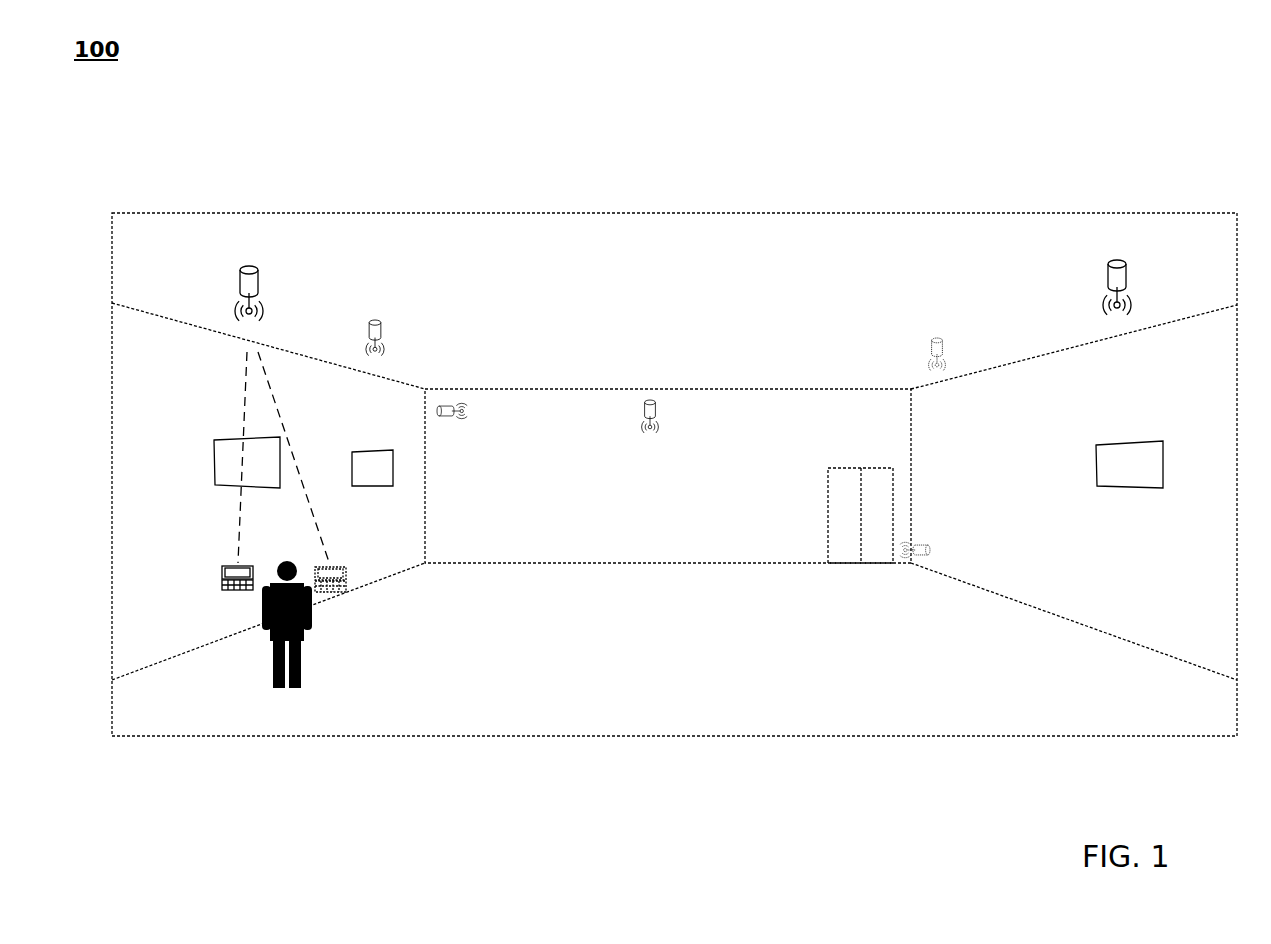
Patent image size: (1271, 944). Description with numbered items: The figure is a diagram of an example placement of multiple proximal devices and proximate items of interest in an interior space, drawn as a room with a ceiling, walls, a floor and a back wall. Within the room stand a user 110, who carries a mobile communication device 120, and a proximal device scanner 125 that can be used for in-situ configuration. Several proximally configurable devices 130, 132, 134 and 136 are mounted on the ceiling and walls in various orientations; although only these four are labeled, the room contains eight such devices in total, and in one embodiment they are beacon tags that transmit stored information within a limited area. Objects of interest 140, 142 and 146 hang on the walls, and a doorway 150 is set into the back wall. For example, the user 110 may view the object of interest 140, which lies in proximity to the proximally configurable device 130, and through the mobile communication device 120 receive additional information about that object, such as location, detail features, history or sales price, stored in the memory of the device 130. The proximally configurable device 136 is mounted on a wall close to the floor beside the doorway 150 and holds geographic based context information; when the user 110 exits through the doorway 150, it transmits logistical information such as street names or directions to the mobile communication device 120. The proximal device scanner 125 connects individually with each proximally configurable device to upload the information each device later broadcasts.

The user 110 is at (315, 618).
The mobile communication device 120 is at (338, 567).
The proximal device scanner 125 is at (237, 566).
The proximally configurable device 130 is at (240, 280).
The proximally configurable device 132 is at (372, 322).
The proximally configurable device 134 is at (1108, 272).
The proximally configurable device 136 is at (934, 550).
The object of interest 140 is at (214, 460).
The object of interest 142 is at (370, 452).
The object of interest 146 is at (1096, 470).
The doorway 150 is at (828, 530).